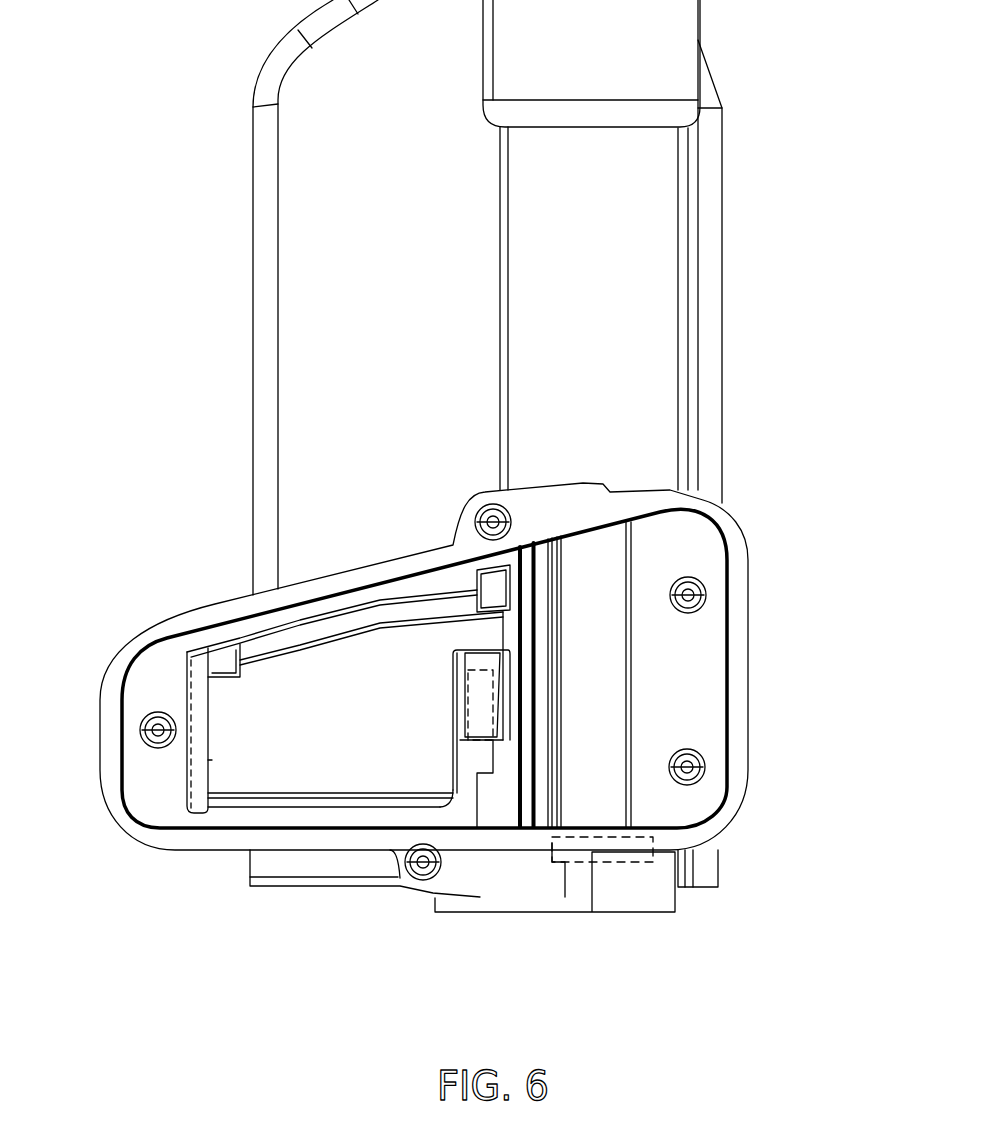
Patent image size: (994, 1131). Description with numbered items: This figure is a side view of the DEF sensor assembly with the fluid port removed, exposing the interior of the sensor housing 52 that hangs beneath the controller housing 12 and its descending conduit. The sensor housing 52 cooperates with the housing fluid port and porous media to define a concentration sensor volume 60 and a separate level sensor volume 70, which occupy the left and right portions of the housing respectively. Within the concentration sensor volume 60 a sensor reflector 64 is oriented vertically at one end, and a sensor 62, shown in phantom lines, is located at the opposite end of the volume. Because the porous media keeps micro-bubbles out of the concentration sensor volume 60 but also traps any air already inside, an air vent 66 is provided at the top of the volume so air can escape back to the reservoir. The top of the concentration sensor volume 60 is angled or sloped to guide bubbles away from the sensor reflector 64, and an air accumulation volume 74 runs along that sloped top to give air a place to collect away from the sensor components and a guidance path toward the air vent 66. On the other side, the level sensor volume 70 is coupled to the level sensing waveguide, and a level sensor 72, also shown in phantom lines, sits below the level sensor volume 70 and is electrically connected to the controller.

The controller housing 12 is at (303, 278).
The sensor housing 52 is at (212, 602).
The concentration sensor volume 60 is at (247, 772).
The sensor 62 is at (478, 772).
The sensor reflector 64 is at (200, 770).
The air vent 66 is at (488, 580).
The level sensor volume 70 is at (600, 740).
The level sensor 72 is at (565, 897).
The air accumulation volume 74 is at (398, 602).